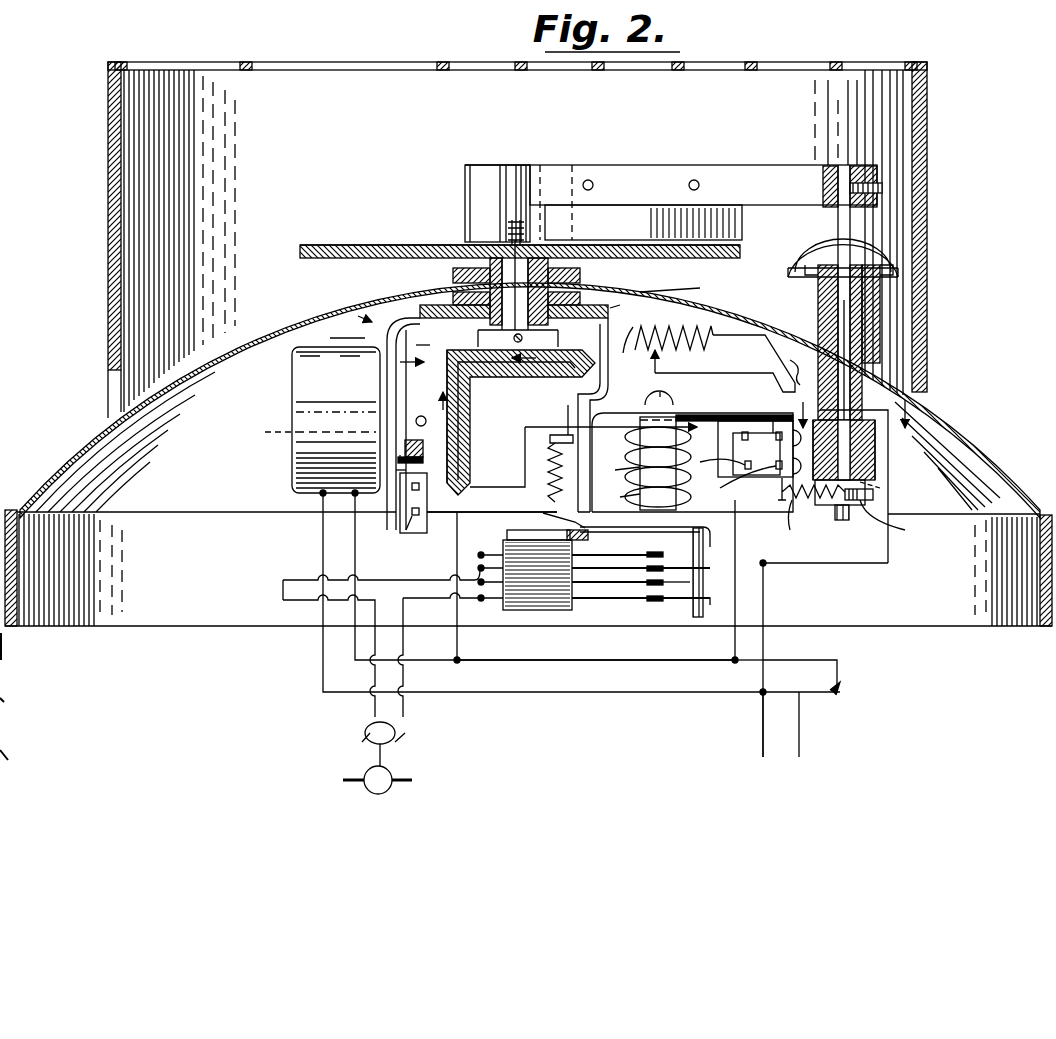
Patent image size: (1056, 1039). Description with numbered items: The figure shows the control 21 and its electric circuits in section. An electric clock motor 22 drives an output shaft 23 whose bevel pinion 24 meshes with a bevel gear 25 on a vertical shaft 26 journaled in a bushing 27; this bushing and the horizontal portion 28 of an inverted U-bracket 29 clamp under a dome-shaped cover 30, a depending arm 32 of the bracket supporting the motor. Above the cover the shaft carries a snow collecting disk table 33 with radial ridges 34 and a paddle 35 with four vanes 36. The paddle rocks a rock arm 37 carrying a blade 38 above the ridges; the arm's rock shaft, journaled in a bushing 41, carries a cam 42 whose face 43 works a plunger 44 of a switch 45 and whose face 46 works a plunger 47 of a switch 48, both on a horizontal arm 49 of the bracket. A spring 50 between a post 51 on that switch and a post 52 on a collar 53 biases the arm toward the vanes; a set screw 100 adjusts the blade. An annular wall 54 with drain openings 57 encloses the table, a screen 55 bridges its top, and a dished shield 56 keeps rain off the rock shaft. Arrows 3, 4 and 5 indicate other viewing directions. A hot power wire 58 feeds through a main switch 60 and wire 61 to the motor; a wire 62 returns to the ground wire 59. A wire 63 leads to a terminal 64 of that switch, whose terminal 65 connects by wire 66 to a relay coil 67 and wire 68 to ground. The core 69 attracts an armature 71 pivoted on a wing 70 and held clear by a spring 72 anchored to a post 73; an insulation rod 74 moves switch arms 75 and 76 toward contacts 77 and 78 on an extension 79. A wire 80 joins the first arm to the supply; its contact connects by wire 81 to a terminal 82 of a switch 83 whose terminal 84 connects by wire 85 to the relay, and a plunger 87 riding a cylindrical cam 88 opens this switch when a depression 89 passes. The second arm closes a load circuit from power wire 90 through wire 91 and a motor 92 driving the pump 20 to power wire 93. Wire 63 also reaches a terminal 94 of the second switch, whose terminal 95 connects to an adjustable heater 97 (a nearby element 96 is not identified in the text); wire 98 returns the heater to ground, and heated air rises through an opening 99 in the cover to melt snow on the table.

The section line 3 is at (798, 24).
The direction arrow 4 is at (425, 348).
The section line 5 is at (867, 435).
The pump 20 is at (392, 772).
The control 21 is at (978, 54).
The electric clock motor 22 is at (292, 388).
The output shaft 23 is at (263, 437).
The bevel pinion 24 is at (470, 396).
The bevel gear 25 is at (560, 372).
The vertical shaft 26 is at (625, 301).
The bushing 27 is at (497, 417).
The horizontal portion 28 is at (452, 282).
The inverted U-bracket 29 is at (353, 323).
The dome-shaped cover 30 is at (240, 330).
The depending arm 32 is at (332, 333).
The disk table 33 is at (300, 252).
The radial ridges 34 is at (330, 245).
The paddle 35 is at (465, 165).
The vanes 36 is at (465, 204).
The rock arm 37 is at (644, 165).
The blade 38 is at (742, 228).
The bushing 41 is at (880, 343).
The cam 42 is at (875, 460).
The face 43 is at (885, 410).
The plunger 44 is at (875, 440).
The electric switch 45 is at (762, 435).
The face 46 is at (880, 488).
The plunger 47 is at (788, 522).
The electric switch 48 is at (763, 460).
The horizontal arm 49 is at (676, 391).
The spring 50 is at (822, 510).
The post 51 is at (782, 490).
The post 52 is at (873, 495).
The collar 53 is at (897, 522).
The annular wall 54 is at (108, 160).
The screen 55 is at (390, 62).
The dished shield 56 is at (885, 262).
The drain openings 57 is at (915, 377).
The power wire 58 is at (799, 727).
The power ground wire 59 is at (763, 728).
The main switch 60 is at (842, 686).
The wire 61 is at (615, 660).
The wire 62 is at (608, 692).
The wire 63 is at (735, 645).
The terminal 64 is at (718, 445).
The terminal 65 is at (782, 430).
The wire 66 is at (710, 425).
The relay coil 67 is at (692, 462).
The wire 68 is at (763, 598).
The core 69 is at (619, 496).
The wing 70 is at (615, 473).
The armature 71 is at (645, 540).
The spring 72 is at (547, 496).
The post 73 is at (611, 422).
The insulation rod 74 is at (711, 572).
The switch arm 75 is at (717, 580).
The switch arm 76 is at (713, 612).
The contact 77 is at (594, 566).
The contact 78 is at (673, 579).
The extension 79 is at (508, 530).
The wire 80 is at (458, 645).
The wire 81 is at (465, 512).
The terminal 82 is at (400, 520).
The switch 83 is at (427, 498).
The terminal 84 is at (400, 480).
The wire 85 is at (482, 487).
The plunger 87 is at (400, 462).
The cylindrical cam 88 is at (420, 382).
The depression 89 is at (440, 446).
The power wire 90 is at (850, 222).
The wire 91 is at (432, 594).
The motor 92 is at (398, 742).
The power wire 93 is at (300, 598).
The terminal 94 is at (717, 458).
The terminal 95 is at (735, 481).
The bracket 96 is at (745, 373).
The adjustable heater 97 is at (663, 352).
The wire 98 is at (797, 359).
The opening 99 is at (679, 279).
The set screw 100 is at (885, 185).